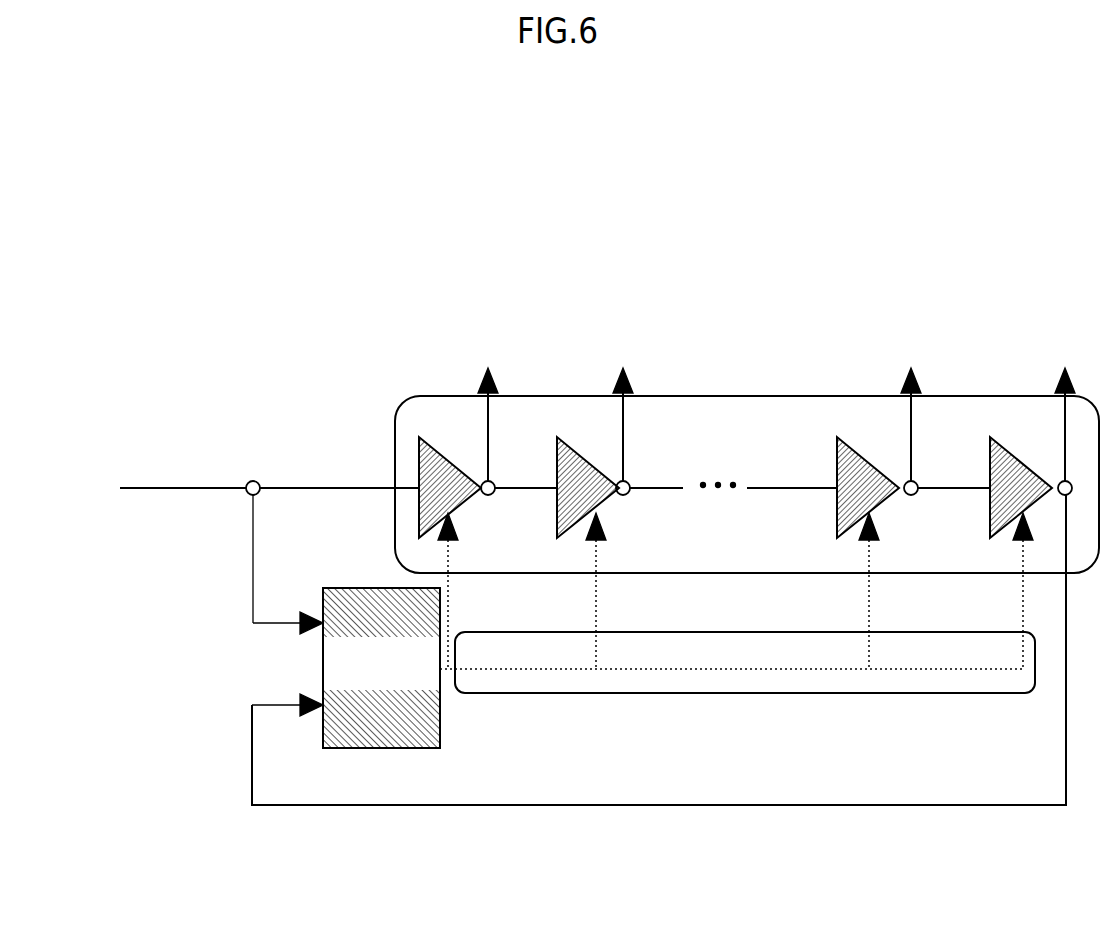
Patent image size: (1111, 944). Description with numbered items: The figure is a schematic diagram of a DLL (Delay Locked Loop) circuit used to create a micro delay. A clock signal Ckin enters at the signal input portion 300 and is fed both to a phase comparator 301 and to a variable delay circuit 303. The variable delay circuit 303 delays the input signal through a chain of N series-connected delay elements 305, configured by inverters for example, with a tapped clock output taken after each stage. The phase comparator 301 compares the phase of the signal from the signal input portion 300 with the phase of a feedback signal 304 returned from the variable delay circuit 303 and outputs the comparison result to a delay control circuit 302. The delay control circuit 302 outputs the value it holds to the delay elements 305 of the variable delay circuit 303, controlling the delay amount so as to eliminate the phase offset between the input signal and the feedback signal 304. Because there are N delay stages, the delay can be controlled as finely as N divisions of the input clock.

The signal input portion 300 is at (137, 428).
The phase comparator 301 is at (397, 757).
The delay control circuit 302 is at (645, 695).
The variable delay circuit 303 is at (418, 377).
The feedback signal 304 is at (912, 805).
The delay element 305 is at (433, 467).